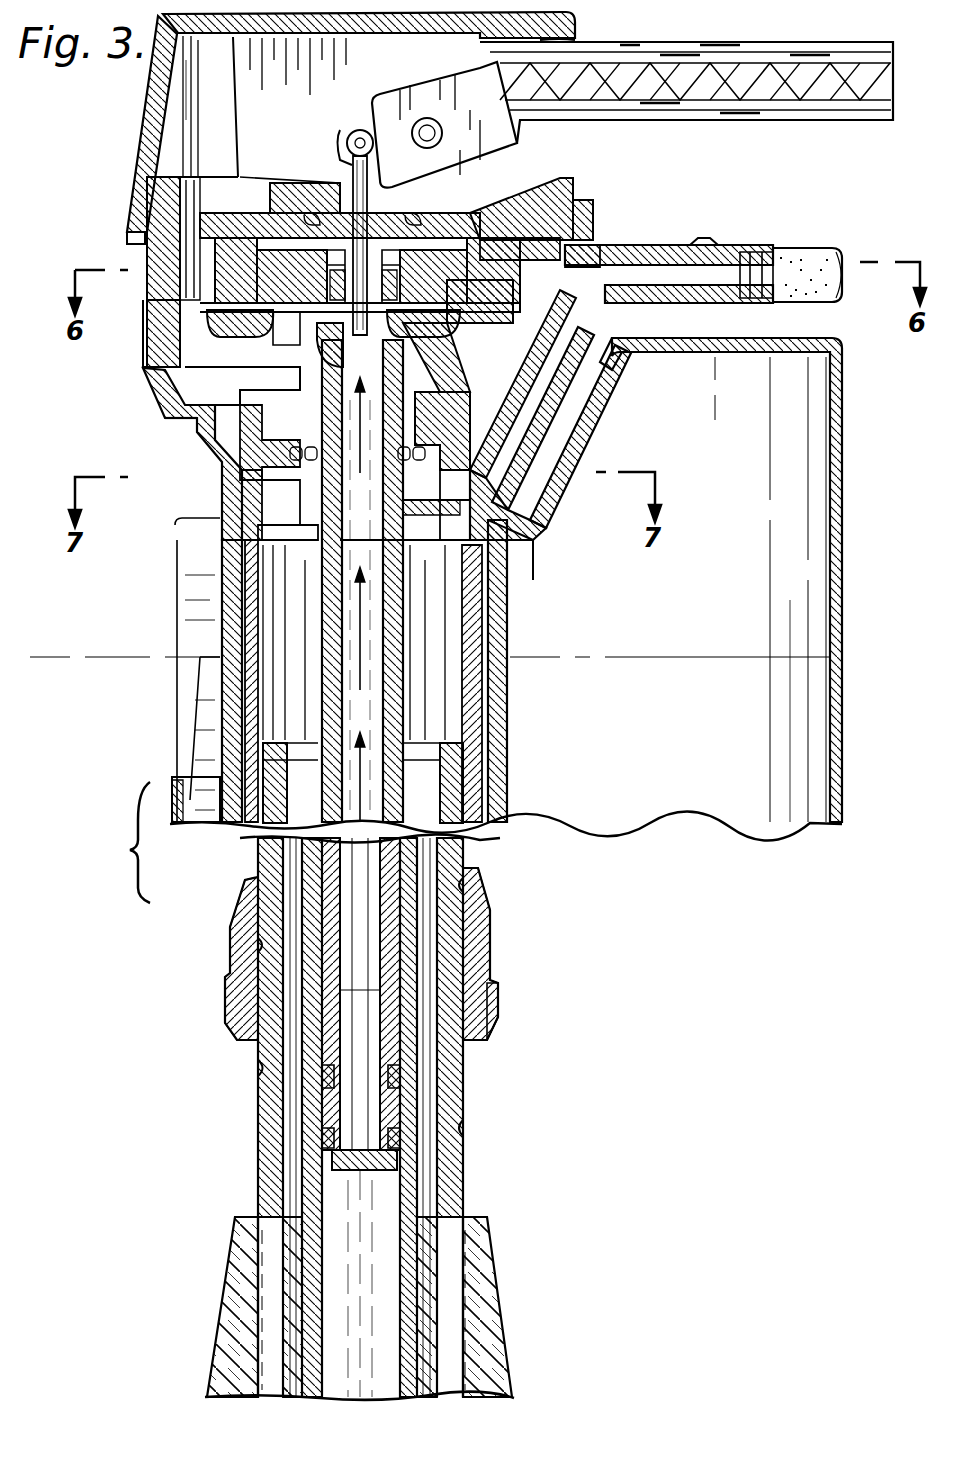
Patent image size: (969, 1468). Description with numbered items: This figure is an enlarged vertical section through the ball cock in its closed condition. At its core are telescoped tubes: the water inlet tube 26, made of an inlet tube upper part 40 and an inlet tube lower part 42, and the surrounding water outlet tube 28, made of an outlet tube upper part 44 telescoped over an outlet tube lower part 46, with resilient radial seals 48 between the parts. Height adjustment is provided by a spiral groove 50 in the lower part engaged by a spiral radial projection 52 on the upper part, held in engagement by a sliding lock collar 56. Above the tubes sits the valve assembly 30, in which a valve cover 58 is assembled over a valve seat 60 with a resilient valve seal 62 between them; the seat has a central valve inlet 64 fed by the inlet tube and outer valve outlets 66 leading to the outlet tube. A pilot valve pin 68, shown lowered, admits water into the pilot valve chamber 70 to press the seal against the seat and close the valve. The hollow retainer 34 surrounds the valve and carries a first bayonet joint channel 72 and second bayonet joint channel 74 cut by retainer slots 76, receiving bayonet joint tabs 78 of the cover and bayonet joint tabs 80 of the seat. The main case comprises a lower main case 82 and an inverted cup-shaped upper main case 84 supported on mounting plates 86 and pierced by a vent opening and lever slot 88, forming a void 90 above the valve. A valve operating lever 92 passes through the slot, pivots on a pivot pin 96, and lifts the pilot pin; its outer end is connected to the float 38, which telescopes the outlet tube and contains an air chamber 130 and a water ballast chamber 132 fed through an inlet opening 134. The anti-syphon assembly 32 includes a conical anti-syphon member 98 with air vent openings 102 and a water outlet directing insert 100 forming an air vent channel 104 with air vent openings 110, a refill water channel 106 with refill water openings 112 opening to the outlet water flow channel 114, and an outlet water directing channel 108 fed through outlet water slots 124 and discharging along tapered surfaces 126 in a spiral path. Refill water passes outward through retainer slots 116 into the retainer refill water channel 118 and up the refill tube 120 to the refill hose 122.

The water inlet tube 26 is at (300, 1214).
The water outlet tube 28 is at (256, 1163).
The valve assembly 30 is at (262, 208).
The anti-syphon assembly 32 is at (192, 422).
The retainer 34 is at (136, 131).
The float 38 is at (843, 509).
The inlet tube upper part 40 is at (400, 705).
The inlet tube lower part 42 is at (408, 1205).
The outlet tube upper part 44 is at (200, 310).
The outlet tube lower part 46 is at (258, 1128).
The resilient radial seals 48 is at (262, 818).
The spiral groove 50 is at (262, 1068).
The spiral radial projection 52 is at (262, 945).
The lock collar 56 is at (492, 1000).
The valve cover 58 is at (296, 205).
The valve seat 60 is at (232, 292).
The valve seal 62 is at (250, 258).
The valve inlet 64 is at (255, 360).
The valve outlets 66 is at (548, 402).
The pilot valve pin 68 is at (345, 165).
The pilot valve chamber 70 is at (500, 200).
The first bayonet joint channel 72 is at (598, 242).
The second bayonet joint channel 74 is at (585, 375).
The retainer slots 76 is at (192, 200).
The bayonet joint tabs 78 is at (505, 215).
The bayonet joint tabs 80 is at (535, 382).
The lower main case 82 is at (142, 380).
The upper main case 84 is at (140, 172).
The mounting plates 86 is at (265, 85).
The vent opening and lever slot 88 is at (568, 40).
The void 90 is at (182, 98).
The valve operating lever 92 is at (740, 48).
The pivot pin 96 is at (425, 128).
The anti-syphon member 98 is at (540, 490).
The water outlet directing insert 100 is at (238, 478).
The air vent openings 102 is at (240, 352).
The air vent channel 104 is at (552, 432).
The refill water channel 106 is at (520, 512).
The outlet water directing channel 108 is at (480, 540).
The air vent openings 110 is at (247, 372).
The refill water openings 112 is at (243, 455).
The outlet water flow channel 114 is at (240, 435).
The retainer slots 116 is at (188, 390).
The retainer refill water channel 118 is at (232, 500).
The refill tube 120 is at (640, 300).
The refill hose 122 is at (800, 270).
The outlet water slots 124 is at (272, 530).
The tapered surfaces 126 is at (507, 566).
The air chamber 130 is at (790, 415).
The water ballast chamber 132 is at (800, 725).
The inlet opening 134 is at (200, 780).